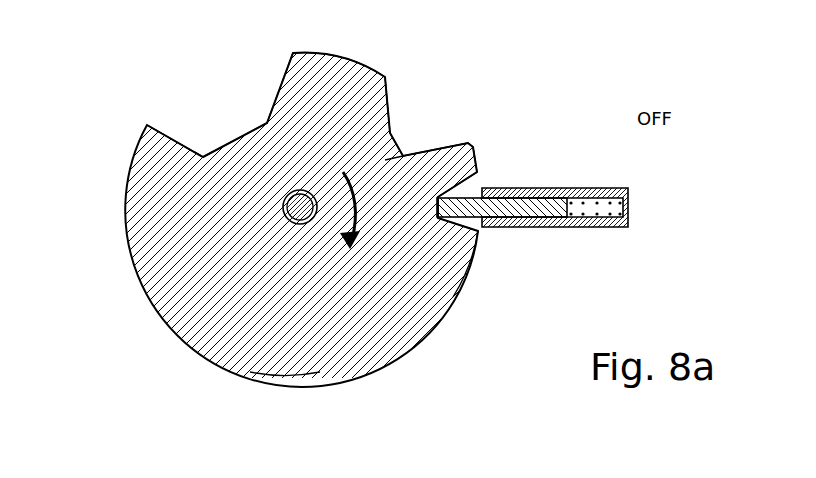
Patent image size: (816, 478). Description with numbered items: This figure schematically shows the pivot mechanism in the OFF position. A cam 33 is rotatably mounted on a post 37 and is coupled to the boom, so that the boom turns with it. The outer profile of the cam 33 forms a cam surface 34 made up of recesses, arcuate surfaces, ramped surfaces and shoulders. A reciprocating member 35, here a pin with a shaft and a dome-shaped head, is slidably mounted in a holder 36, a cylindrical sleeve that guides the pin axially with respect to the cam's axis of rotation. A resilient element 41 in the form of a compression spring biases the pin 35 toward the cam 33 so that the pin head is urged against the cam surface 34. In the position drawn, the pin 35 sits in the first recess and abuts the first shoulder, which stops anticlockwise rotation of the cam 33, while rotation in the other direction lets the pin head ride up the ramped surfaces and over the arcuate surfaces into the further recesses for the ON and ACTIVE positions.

The cam 33 is at (237, 342).
The cam surface 34 is at (283, 384).
The holder 36 is at (573, 290).
The post 37 is at (284, 215).
The reciprocating member 35 is at (537, 290).
The resilient element 41 is at (593, 229).